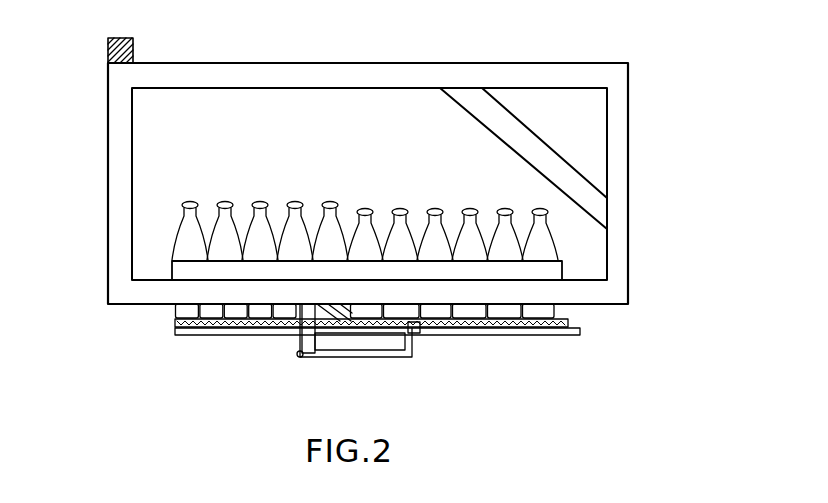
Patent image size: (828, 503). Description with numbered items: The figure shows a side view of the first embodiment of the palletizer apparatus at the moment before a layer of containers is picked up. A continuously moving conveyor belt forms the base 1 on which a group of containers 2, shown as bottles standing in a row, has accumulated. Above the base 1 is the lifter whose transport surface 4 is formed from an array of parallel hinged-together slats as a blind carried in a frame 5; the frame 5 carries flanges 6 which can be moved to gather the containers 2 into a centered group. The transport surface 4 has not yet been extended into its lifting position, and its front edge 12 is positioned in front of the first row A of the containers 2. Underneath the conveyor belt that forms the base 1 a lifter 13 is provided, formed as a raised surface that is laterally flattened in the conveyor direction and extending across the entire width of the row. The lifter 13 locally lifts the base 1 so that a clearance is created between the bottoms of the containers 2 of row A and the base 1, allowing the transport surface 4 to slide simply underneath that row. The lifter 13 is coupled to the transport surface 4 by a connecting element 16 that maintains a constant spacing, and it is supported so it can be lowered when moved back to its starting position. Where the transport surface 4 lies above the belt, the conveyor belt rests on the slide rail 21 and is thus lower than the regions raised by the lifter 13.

The conveyor belt 1 is at (570, 318).
The containers 2 is at (365, 196).
The row of containers A is at (401, 209).
The transport surface 4 is at (176, 308).
The frame 5 is at (177, 78).
The flanges 6 is at (172, 262).
The front edge 12 is at (335, 334).
The lifter 13 is at (418, 335).
The connecting element 16 is at (383, 357).
The slide rail 21 is at (567, 337).